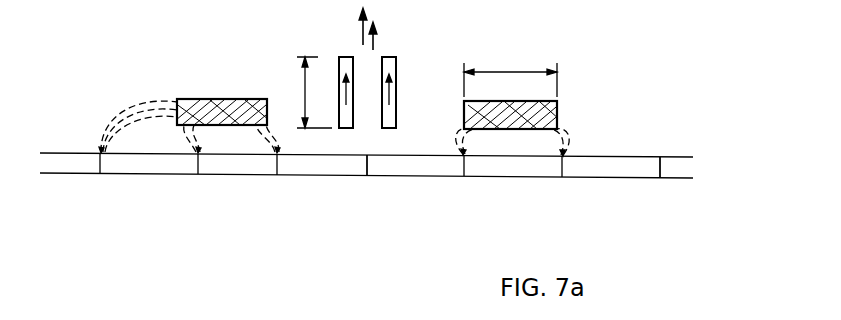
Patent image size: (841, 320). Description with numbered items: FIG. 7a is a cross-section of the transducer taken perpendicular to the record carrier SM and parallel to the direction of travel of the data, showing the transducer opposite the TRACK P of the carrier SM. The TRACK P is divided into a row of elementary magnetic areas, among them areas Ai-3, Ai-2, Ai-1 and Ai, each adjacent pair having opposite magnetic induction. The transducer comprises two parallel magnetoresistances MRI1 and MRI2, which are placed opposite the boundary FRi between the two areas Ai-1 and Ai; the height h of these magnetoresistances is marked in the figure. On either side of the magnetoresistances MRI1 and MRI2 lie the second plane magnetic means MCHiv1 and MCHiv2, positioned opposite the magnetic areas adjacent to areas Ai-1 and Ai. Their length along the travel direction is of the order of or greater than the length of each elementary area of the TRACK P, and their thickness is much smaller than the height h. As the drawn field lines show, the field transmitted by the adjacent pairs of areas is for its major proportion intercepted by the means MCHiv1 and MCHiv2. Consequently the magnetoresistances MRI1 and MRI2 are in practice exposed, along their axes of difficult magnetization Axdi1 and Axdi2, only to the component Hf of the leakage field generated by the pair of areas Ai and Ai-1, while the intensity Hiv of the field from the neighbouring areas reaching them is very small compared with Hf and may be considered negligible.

The track TRACK P is at (374, 207).
The record carrier SM is at (682, 179).
The magnetic area Ai-3 is at (143, 174).
The magnetic area Ai-2 is at (250, 175).
The magnetic area Ai-1 is at (336, 176).
The boundary FRi is at (363, 176).
The magnetic area Ai is at (432, 177).
The second plane magnetic means MCHiv1 is at (246, 99).
The second plane magnetic means MCHiv2 is at (505, 102).
The magnetoresistance MRI1 is at (338, 62).
The magnetoresistance MRI2 is at (397, 68).
The height h is at (310, 92).
The leakage field component Hf is at (354, 22).
The magnetic field intensity Hiv is at (386, 33).
The axis of difficult magnetization Axdi1 is at (377, 133).
The axis of difficult magnetization Axdi2 is at (421, 104).